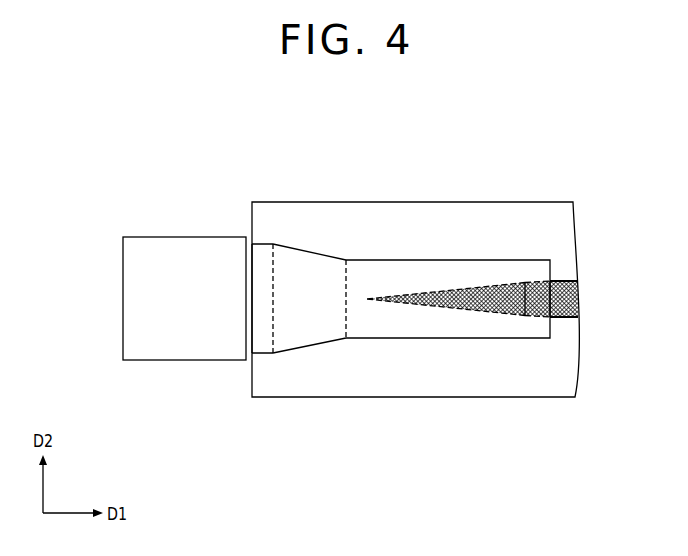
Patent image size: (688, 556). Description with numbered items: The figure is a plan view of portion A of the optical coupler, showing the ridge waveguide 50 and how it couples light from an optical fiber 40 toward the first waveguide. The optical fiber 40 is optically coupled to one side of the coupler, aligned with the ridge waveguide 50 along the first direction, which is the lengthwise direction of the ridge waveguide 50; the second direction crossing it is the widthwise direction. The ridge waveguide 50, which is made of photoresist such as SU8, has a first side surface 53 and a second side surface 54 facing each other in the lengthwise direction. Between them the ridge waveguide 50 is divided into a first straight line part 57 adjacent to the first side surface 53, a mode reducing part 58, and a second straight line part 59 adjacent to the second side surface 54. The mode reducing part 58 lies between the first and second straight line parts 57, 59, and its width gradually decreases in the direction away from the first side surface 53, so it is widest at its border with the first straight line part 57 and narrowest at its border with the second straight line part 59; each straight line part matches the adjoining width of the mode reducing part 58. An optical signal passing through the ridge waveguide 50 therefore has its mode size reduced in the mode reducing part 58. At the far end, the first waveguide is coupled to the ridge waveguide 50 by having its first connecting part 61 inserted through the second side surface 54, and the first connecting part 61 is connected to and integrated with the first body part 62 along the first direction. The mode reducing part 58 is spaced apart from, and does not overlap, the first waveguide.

The portion A is at (598, 112).
The optical fiber 40 is at (180, 253).
The ridge waveguide 50 is at (397, 466).
The first side surface 53 is at (252, 326).
The second side surface 54 is at (549, 325).
The first straight line part 57 is at (264, 342).
The mode reducing part 58 is at (313, 333).
The second straight line part 59 is at (383, 323).
The first connecting part 61 is at (483, 295).
The first body part 62 is at (540, 292).